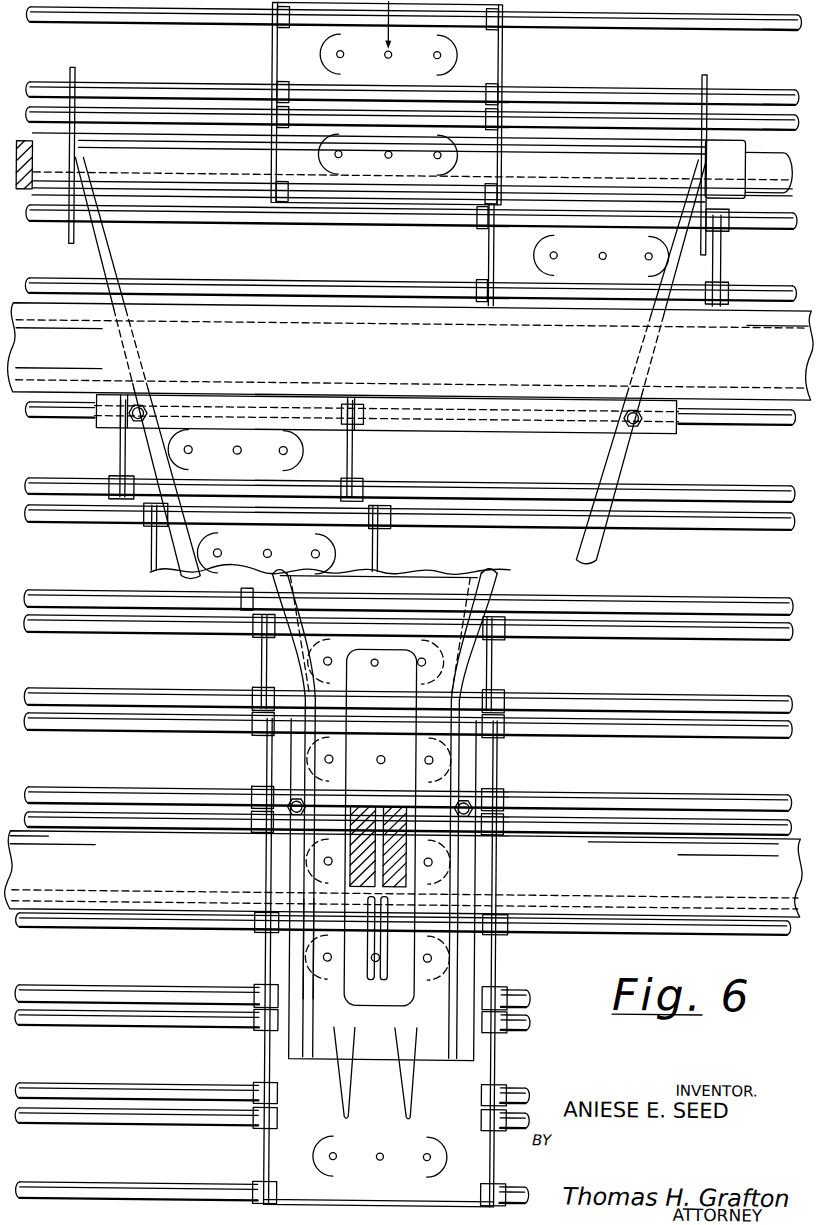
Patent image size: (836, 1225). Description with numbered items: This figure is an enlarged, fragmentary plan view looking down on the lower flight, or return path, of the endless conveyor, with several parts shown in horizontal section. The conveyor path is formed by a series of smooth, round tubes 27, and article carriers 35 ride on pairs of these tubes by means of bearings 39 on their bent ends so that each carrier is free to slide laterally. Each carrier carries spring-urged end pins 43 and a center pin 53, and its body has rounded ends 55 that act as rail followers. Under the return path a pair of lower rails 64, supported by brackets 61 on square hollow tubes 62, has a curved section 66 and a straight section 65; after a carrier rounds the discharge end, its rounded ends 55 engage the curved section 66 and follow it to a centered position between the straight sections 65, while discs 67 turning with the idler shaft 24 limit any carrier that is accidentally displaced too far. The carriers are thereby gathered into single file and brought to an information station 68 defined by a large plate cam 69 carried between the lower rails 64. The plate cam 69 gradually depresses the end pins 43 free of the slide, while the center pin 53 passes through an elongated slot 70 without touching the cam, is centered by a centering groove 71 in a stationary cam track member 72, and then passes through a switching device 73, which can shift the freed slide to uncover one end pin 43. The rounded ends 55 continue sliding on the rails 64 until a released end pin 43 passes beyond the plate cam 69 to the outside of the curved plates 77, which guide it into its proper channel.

The idler shaft 24 is at (567, 161).
The tubes 27 is at (652, 51).
The article carriers 35 is at (284, 49).
The bearings 39 is at (496, 88).
The end pins 43 is at (339, 52).
The center pin 53 is at (386, 58).
The rounded ends 55 is at (324, 50).
The brackets 61 is at (512, 434).
The square hollow tubes 62 is at (338, 351).
The lower rails 64 is at (114, 251).
The straight section 65 is at (292, 967).
The curved section 66 is at (121, 453).
The discs 67 is at (69, 73).
The information station 68 is at (382, 992).
The plate cam 69 is at (418, 574).
The elongated slot 70 is at (415, 749).
The centering groove 71 is at (268, 849).
The cam track member 72 is at (268, 874).
The switching device 73 is at (312, 940).
The curved plates 77 is at (336, 1072).